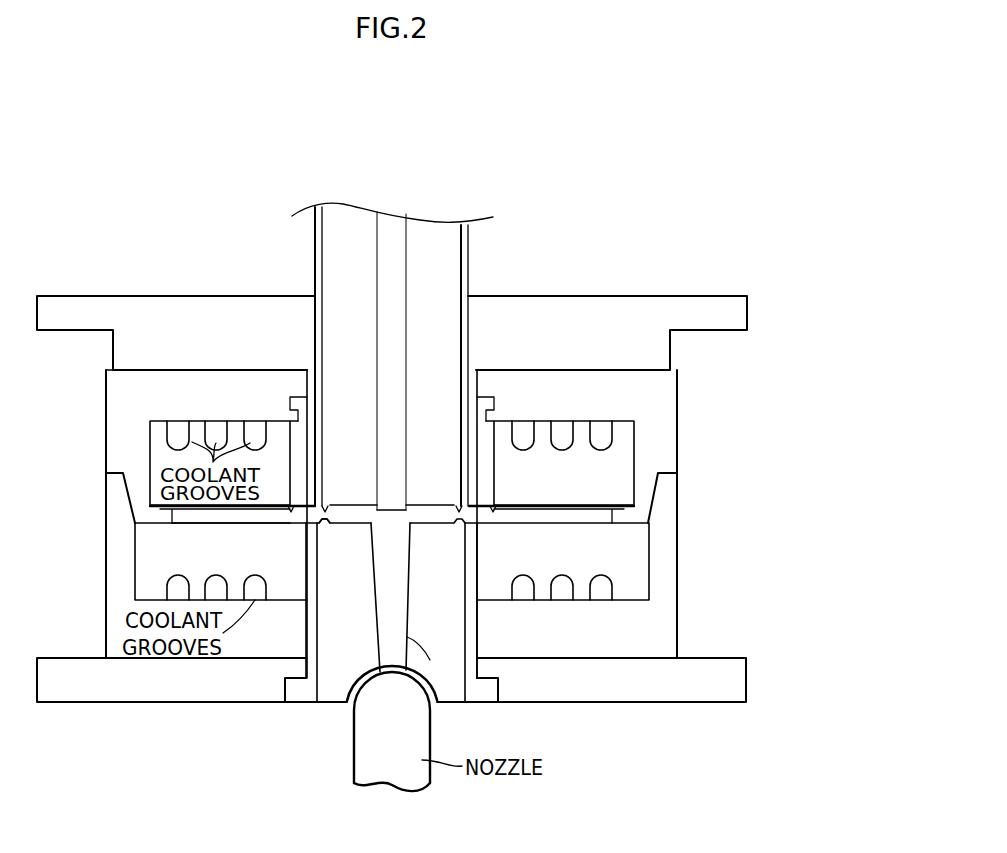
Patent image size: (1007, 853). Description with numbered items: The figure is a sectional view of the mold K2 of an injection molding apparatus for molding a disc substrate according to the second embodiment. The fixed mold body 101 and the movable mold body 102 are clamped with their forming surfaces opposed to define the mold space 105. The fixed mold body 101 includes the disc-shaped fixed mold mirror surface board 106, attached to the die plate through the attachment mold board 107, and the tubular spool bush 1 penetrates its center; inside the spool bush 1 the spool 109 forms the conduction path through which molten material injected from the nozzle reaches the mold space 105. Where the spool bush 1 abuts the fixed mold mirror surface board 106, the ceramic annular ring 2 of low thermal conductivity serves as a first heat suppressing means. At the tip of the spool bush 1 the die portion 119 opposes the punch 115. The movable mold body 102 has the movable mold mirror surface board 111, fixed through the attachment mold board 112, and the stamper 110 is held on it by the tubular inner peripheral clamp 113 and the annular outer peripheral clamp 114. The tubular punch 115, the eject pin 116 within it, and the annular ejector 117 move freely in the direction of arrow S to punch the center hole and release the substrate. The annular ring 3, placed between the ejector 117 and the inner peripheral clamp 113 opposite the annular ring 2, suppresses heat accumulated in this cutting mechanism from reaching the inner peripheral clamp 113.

The spool bush 1 is at (328, 692).
The annular ring 2 is at (468, 620).
The annular ring 3 is at (484, 403).
The fixed mold body 101 is at (117, 553).
The movable mold body 102 is at (122, 445).
The mold space 105 is at (190, 516).
The fixed mold mirror surface board 106 is at (148, 568).
The attachment mold board 107 is at (137, 690).
The spool 109 is at (407, 637).
The stamper 110 is at (247, 512).
The movable mold mirror surface board 111 is at (153, 455).
The attachment mold board 112 is at (96, 320).
The inner peripheral clamp 113 is at (303, 399).
The outer peripheral clamp 114 is at (148, 517).
The punch 115 is at (450, 283).
The eject pin 116 is at (395, 230).
The ejector 117 is at (316, 236).
The die portion 119 is at (325, 528).
The mold K2 is at (645, 238).
The arrow S is at (759, 283).